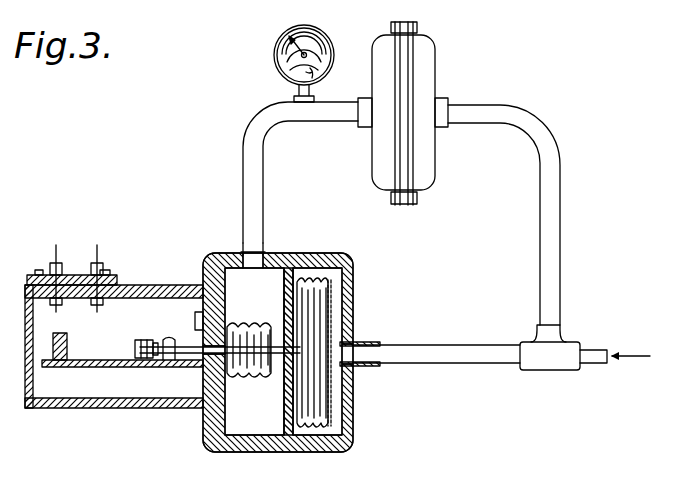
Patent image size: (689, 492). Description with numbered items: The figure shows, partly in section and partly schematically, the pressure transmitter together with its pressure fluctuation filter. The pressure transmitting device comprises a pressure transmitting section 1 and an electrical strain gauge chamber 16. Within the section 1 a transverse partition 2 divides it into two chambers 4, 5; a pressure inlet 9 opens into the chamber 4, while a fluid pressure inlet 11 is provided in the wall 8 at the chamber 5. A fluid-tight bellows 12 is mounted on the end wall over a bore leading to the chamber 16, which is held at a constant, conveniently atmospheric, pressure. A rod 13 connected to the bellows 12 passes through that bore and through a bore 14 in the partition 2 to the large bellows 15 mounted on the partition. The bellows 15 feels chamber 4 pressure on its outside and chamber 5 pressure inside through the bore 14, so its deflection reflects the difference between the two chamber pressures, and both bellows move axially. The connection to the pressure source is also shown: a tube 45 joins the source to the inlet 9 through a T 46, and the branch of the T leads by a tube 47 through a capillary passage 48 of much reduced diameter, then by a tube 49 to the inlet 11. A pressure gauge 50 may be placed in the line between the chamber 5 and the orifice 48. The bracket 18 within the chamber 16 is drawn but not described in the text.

The pressure transmitting section 1 is at (318, 252).
The transverse partition 2 is at (289, 259).
The chamber 4 is at (352, 270).
The chamber 5 is at (256, 303).
The wall 8 is at (368, 25).
The pressure inlet 9 is at (398, 356).
The fluid pressure inlet 11 is at (245, 248).
The bellows 12 is at (240, 378).
The rod 13 is at (185, 345).
The bore 14 is at (272, 338).
The large bellows 15 is at (330, 393).
The electrical strain gauge chamber 16 is at (167, 290).
The mounting bracket 18 is at (92, 368).
The tube 45 is at (583, 343).
The T 46 is at (552, 364).
The tube 47 is at (556, 246).
The capillary passage 48 is at (422, 51).
The tube 49 is at (251, 161).
The pressure gauge 50 is at (287, 62).